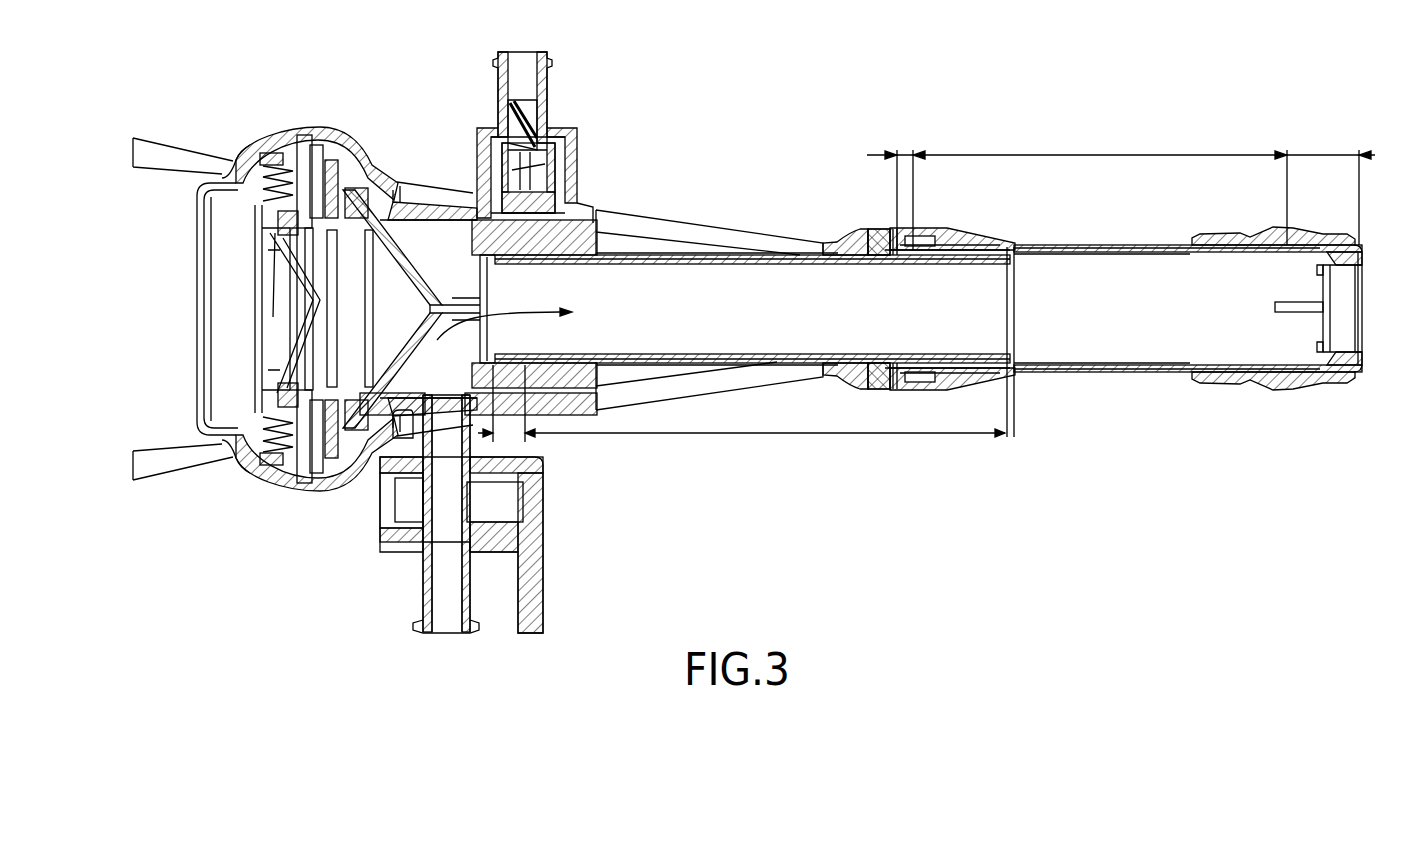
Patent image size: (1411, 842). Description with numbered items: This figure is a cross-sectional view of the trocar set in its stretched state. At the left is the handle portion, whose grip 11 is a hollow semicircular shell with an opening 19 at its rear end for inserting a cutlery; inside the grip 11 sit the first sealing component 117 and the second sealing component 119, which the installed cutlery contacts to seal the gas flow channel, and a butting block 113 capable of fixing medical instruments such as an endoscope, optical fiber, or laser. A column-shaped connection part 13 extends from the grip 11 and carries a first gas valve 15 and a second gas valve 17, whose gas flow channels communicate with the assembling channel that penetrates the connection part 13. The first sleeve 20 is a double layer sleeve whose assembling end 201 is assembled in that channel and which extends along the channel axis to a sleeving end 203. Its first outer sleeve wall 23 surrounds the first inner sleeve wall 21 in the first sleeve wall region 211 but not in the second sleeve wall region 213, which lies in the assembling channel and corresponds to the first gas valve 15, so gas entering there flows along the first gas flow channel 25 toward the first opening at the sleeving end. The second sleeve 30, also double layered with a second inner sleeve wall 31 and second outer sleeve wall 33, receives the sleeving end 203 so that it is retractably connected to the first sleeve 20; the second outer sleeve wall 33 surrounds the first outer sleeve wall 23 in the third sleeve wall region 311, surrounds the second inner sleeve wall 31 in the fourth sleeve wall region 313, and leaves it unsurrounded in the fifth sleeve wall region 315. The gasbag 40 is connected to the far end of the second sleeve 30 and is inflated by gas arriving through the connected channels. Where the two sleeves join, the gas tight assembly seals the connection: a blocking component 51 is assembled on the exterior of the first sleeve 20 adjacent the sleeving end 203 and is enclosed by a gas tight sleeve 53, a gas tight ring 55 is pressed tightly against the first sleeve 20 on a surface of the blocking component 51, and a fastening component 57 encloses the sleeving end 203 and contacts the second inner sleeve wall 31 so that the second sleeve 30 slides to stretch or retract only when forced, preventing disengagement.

The grip 11 is at (275, 140).
The connection part 13 is at (430, 188).
The first gas valve 15 is at (567, 137).
The second gas valve 17 is at (543, 585).
The opening 19 is at (218, 286).
The first sleeve 20 is at (633, 283).
The first inner sleeve wall 21 is at (740, 250).
The first outer sleeve wall 23 is at (681, 258).
The first gas flow channel 25 is at (796, 253).
The second sleeve 30 is at (1060, 287).
The second inner sleeve wall 31 is at (1110, 250).
The second outer sleeve wall 33 is at (1172, 250).
The gasbag 40 is at (1226, 237).
The blocking component 51 is at (879, 240).
The gas tight sleeve 53 is at (962, 235).
The gas tight ring 55 is at (842, 245).
The fastening component 57 is at (1009, 255).
The butting block 113 is at (232, 160).
The first sealing component 117 is at (268, 250).
The second sealing component 119 is at (388, 186).
The assembling end 201 is at (480, 132).
The sleeving end 203 is at (1010, 330).
The first sleeve wall region 211 is at (758, 436).
The second sleeve wall region 213 is at (510, 435).
The third sleeve wall region 311 is at (905, 153).
The fourth sleeve wall region 313 is at (1130, 153).
The fifth sleeve wall region 315 is at (1325, 153).